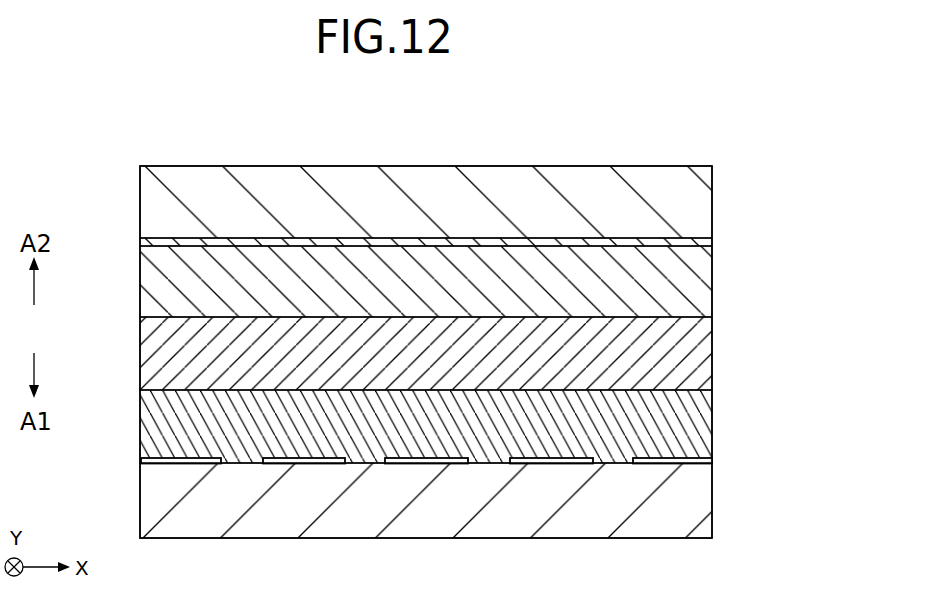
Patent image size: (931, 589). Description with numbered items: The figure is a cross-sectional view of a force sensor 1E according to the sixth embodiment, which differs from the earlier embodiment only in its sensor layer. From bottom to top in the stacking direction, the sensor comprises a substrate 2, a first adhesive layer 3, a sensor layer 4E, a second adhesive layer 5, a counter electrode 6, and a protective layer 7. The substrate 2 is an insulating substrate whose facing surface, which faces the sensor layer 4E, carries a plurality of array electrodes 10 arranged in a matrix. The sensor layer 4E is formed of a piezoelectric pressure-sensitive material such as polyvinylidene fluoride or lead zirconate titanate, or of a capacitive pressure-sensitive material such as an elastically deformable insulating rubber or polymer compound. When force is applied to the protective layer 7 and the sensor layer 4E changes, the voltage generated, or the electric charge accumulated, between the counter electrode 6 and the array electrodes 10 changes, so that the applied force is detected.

The force sensor 1E is at (706, 122).
The substrate 2 is at (700, 505).
The first adhesive layer 3 is at (697, 418).
The sensor layer 4E is at (695, 354).
The second adhesive layer 5 is at (693, 297).
The counter electrode 6 is at (697, 252).
The protective layer 7 is at (699, 203).
The array electrodes 10 is at (693, 458).